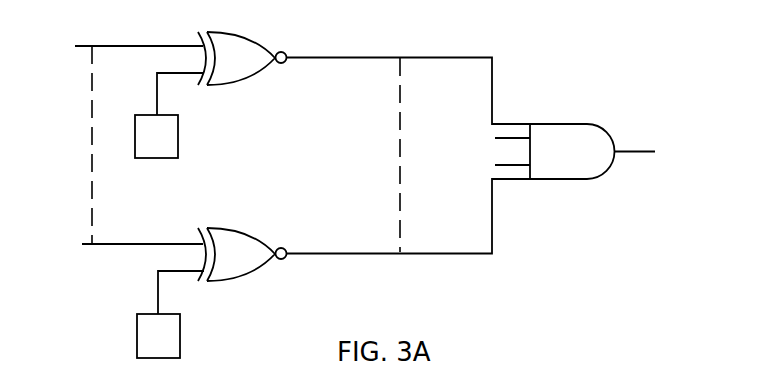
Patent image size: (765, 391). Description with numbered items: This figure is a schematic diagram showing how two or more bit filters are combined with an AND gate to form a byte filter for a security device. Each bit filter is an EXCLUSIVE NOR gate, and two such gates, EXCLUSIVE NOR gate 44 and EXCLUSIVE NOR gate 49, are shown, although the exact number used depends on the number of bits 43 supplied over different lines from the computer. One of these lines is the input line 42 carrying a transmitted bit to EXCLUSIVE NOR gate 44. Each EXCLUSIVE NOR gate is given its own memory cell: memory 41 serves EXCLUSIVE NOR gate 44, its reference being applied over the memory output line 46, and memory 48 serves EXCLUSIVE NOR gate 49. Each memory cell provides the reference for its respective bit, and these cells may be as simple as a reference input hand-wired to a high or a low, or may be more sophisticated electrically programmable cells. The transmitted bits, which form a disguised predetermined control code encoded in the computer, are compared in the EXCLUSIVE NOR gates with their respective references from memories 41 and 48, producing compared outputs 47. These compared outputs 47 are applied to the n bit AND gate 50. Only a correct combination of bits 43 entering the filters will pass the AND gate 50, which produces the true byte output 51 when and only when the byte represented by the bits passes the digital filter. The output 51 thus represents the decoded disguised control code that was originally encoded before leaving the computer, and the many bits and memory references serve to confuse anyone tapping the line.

The memory 41 is at (178, 145).
The input line 42 is at (145, 44).
The bits 43 is at (92, 172).
The EXCLUSIVE NOR gate 44 is at (231, 32).
The memory output line 46 is at (156, 96).
The compared outputs 47 is at (399, 158).
The memory 48 is at (180, 338).
The EXCLUSIVE NOR gate 49 is at (240, 283).
The AND gate 50 is at (578, 124).
The true byte output 51 is at (628, 152).